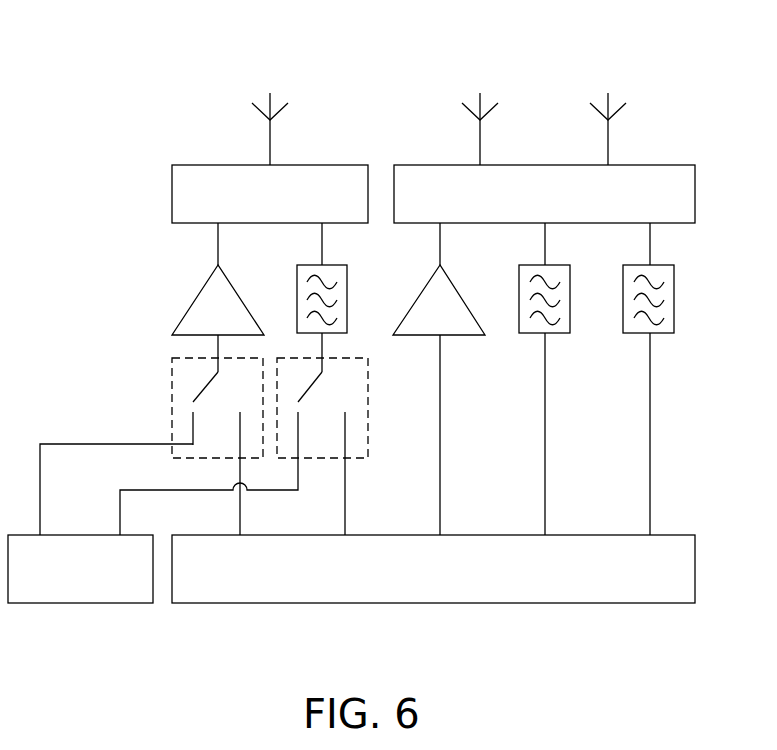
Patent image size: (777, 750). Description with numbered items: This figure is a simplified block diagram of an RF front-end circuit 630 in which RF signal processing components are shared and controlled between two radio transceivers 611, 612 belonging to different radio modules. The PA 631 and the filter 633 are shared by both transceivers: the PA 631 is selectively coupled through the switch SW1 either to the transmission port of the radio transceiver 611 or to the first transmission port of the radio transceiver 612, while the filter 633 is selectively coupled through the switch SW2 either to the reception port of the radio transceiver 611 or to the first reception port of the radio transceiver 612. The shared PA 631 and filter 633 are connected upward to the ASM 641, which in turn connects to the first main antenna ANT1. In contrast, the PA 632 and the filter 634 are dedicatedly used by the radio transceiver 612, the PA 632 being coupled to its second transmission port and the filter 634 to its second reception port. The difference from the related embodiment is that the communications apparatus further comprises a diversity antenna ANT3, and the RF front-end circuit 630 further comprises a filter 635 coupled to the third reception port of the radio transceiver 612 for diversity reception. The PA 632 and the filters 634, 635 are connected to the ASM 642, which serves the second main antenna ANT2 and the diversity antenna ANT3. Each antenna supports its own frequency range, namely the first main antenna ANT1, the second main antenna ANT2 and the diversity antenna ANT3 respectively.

The RF front-end circuit 630 is at (73, 38).
The radio transceiver 611 is at (8, 603).
The radio transceiver 612 is at (172, 603).
The PA 631 is at (198, 296).
The PA 632 is at (416, 298).
The filter 633 is at (333, 265).
The filter 634 is at (556, 265).
The filter 635 is at (660, 265).
The ASM 641 is at (172, 165).
The ASM 642 is at (394, 165).
The first main antenna ANT1 is at (272, 143).
The second main antenna ANT2 is at (482, 143).
The diversity antenna ANT3 is at (610, 143).
The switch SW1 is at (172, 408).
The switch SW2 is at (403, 388).